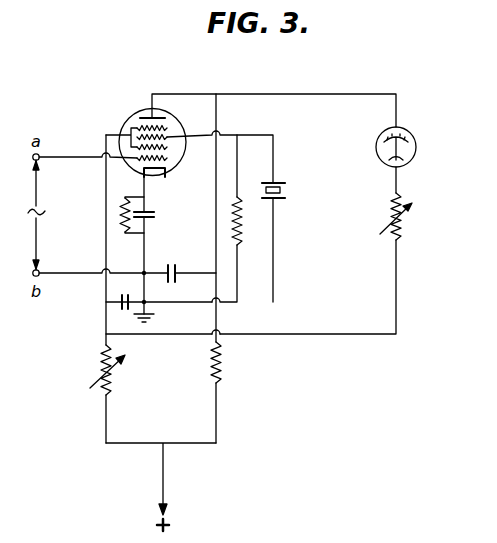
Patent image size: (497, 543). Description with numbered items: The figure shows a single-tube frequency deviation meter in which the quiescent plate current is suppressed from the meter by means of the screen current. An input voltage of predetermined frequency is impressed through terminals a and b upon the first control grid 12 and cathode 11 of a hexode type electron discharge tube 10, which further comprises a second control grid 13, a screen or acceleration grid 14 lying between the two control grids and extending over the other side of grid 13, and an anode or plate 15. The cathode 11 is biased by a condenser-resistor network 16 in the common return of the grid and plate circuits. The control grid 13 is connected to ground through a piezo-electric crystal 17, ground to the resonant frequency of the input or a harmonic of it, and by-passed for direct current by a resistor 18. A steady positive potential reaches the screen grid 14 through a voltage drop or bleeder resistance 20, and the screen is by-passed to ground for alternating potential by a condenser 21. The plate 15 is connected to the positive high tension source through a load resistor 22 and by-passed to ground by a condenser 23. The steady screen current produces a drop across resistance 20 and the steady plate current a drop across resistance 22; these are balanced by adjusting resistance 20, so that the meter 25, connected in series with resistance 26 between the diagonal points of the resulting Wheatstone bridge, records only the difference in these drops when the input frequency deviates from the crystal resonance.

The hexode type electron discharge tube 10 is at (177, 119).
The cathode 11 is at (162, 170).
The first control grid 12 is at (167, 158).
The second control grid 13 is at (167, 137).
The screen or acceleration grid 14 is at (136, 127).
The anode or plate 15 is at (151, 116).
The condenser-resistor network 16 is at (145, 225).
The piezo-electric crystal 17 is at (276, 185).
The resistor 18 is at (240, 217).
The voltage drop or bleeder resistance 20 is at (114, 378).
The condenser 21 is at (119, 306).
The load resistor 22 is at (220, 360).
The condenser 23 is at (173, 267).
The meter 25 is at (415, 146).
The resistance 26 is at (404, 224).